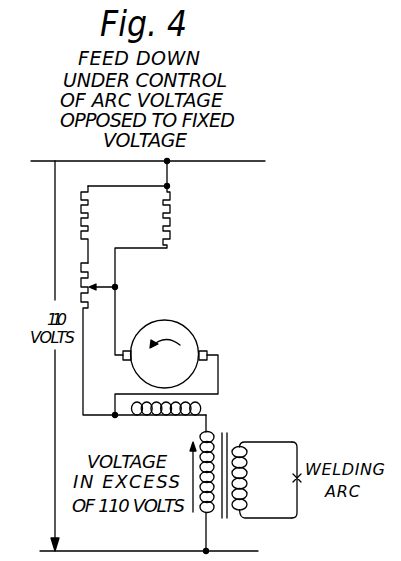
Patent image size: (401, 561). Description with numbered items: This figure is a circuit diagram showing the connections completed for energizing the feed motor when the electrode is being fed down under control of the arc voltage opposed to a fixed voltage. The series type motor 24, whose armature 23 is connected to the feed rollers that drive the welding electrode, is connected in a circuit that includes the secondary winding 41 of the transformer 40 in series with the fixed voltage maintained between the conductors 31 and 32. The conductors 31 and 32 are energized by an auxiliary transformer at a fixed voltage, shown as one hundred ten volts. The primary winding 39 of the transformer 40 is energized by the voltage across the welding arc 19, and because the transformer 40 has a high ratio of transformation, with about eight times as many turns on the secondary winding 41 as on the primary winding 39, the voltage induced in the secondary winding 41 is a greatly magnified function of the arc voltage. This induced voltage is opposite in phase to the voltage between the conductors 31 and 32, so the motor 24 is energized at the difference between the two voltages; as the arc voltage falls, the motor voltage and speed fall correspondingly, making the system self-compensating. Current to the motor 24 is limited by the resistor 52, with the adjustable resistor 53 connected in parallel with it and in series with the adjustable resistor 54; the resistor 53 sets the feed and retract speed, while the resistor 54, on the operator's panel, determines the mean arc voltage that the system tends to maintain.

The conductor 31 is at (236, 161).
The conductor 32 is at (256, 543).
The resistor 52 is at (172, 213).
The adjustable resistor 53 is at (91, 213).
The adjustable resistor 54 is at (90, 273).
The armature 23 is at (171, 321).
The motor 24 is at (238, 382).
The transformer 40 is at (231, 424).
The primary winding 39 is at (244, 451).
The secondary winding 41 is at (203, 515).
The arc 19 is at (289, 478).